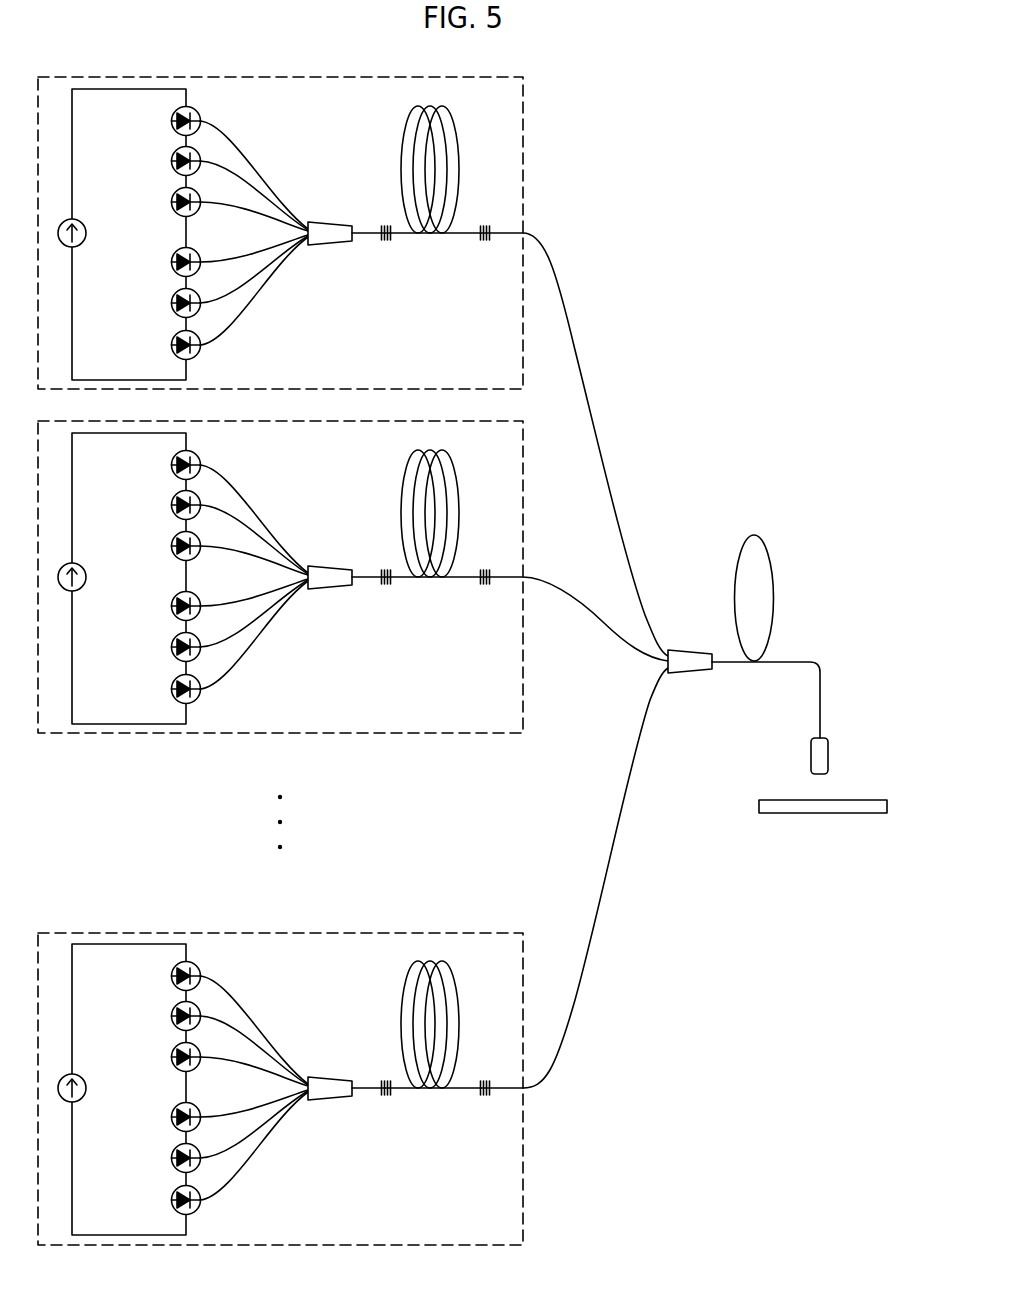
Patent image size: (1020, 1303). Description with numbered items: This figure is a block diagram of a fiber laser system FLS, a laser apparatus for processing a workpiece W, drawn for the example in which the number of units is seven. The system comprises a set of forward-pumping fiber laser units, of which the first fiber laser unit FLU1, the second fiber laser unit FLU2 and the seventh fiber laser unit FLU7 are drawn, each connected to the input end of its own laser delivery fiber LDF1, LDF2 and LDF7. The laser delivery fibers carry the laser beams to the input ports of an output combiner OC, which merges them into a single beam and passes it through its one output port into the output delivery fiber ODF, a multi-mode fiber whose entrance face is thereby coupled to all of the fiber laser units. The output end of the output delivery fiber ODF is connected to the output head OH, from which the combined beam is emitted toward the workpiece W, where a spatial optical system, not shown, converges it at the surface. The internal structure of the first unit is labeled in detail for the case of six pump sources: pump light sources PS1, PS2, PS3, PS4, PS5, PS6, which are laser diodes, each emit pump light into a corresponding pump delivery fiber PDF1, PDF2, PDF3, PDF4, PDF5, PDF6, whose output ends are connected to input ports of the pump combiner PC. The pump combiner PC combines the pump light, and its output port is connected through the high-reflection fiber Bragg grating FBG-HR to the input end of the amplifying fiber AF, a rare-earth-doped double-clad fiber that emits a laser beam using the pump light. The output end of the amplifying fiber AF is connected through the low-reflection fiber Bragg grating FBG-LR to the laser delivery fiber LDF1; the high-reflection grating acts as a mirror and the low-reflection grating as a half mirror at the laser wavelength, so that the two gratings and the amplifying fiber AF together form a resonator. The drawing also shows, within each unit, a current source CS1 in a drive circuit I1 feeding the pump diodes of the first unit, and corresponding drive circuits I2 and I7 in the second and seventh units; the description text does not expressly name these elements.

The fiber laser system FLS is at (738, 156).
The fiber laser unit FLU1 is at (518, 110).
The fiber laser unit FLU2 is at (518, 454).
The fiber laser unit FLU7 is at (518, 967).
The drive current circuit 1 I1 is at (115, 234).
The drive current circuit 2 I2 is at (65, 558).
The drive current circuit 7 I7 is at (65, 1069).
The current source CS1 is at (87, 233).
The pump light source PS1 is at (171, 122).
The pump light source PS2 is at (171, 162).
The pump light source PS3 is at (171, 203).
The pump light source PS4 is at (171, 263).
The pump light source PS5 is at (171, 304).
The pump light source PS6 is at (171, 346).
The pump delivery fiber PDF1 is at (221, 135).
The pump delivery fiber PDF2 is at (237, 167).
The pump delivery fiber PDF3 is at (248, 205).
The pump delivery fiber PDF4 is at (247, 262).
The pump delivery fiber PDF5 is at (237, 302).
The pump delivery fiber PDF6 is at (229, 339).
The pump combiner PC is at (328, 247).
The high-reflection fiber Bragg grating FBG-HR is at (387, 244).
The low-reflection fiber Bragg grating FBG-LR is at (486, 244).
The amplifying fiber AF is at (459, 165).
The laser delivery fiber LDF1 is at (606, 429).
The laser delivery fiber LDF2 is at (605, 624).
The laser delivery fiber LDF7 is at (604, 893).
The output combiner OC is at (688, 675).
The output delivery fiber ODF is at (754, 534).
The output head OH is at (830, 757).
The workpiece W is at (771, 799).